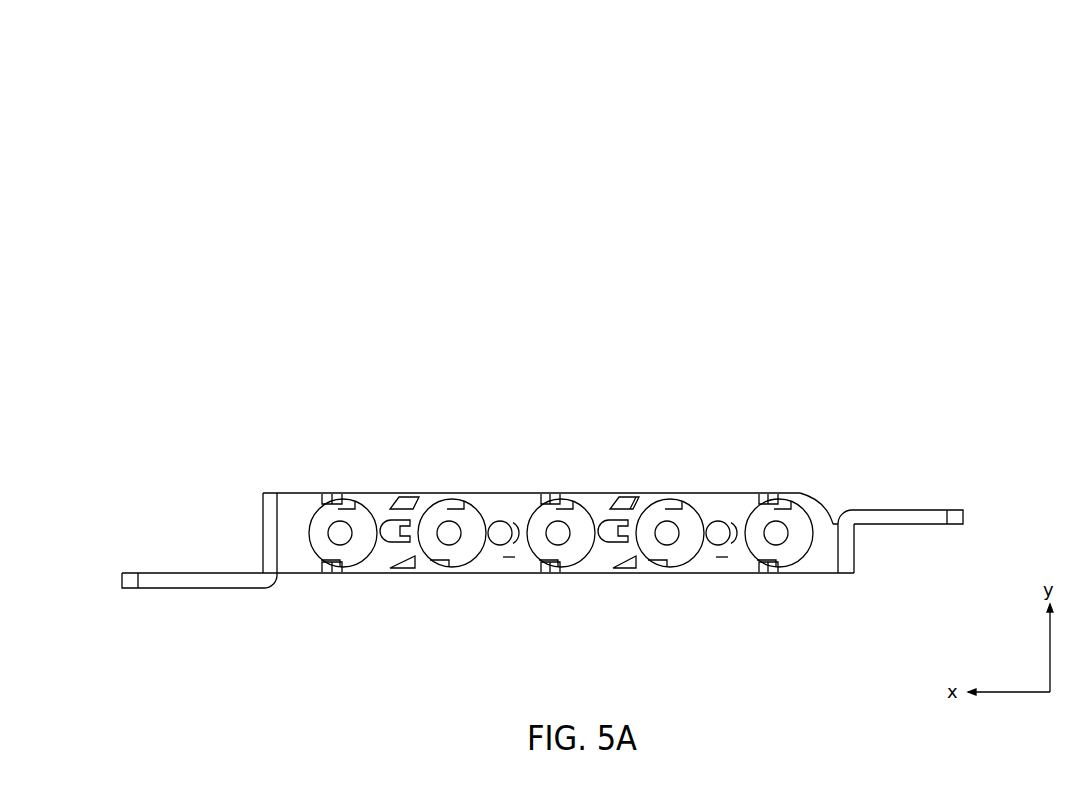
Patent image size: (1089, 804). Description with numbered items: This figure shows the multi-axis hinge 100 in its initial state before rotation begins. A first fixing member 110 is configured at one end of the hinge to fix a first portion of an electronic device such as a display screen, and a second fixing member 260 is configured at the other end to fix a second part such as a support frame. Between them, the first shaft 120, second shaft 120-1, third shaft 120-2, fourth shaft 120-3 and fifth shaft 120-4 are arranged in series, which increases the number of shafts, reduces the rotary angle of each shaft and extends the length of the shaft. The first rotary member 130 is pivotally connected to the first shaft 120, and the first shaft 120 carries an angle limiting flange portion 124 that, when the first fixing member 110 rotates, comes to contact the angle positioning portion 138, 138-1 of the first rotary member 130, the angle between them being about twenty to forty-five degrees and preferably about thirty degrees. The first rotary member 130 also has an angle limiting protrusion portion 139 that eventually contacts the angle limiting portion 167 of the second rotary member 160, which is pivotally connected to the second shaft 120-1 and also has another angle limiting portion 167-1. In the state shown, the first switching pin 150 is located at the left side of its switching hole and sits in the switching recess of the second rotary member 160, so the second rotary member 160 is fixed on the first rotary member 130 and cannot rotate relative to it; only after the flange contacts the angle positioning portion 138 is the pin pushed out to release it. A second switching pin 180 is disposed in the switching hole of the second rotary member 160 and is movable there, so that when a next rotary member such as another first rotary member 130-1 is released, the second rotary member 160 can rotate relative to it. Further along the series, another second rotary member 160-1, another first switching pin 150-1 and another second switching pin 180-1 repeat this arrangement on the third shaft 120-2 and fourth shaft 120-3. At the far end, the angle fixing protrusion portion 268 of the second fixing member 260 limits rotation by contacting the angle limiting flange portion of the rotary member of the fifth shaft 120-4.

The multi-axis hinge 100 is at (70, 53).
The first fixing member 110 is at (900, 509).
The first shaft 120 is at (779, 534).
The second shaft 120-1 is at (664, 530).
The third shaft 120-2 is at (558, 534).
The fourth shaft 120-3 is at (449, 534).
The fifth shaft 120-4 is at (340, 534).
The angle limiting flange portion 124 is at (803, 493).
The first rotary member 130 is at (722, 557).
The another first rotary member 130-1 is at (510, 558).
The angle positioning portion 138 is at (766, 493).
The angle positioning portion 138-1 is at (765, 573).
The angle limiting protrusion portion 139 is at (660, 510).
The first switching pin 150 is at (718, 530).
The first switching pin 150-1 is at (500, 530).
The second rotary member 160 is at (600, 510).
The another second rotary member 160-1 is at (381, 573).
The angle limiting portion 167 is at (630, 557).
The angle limiting portion 167-1 is at (628, 505).
The second switching pin 180 is at (610, 548).
The second switching pin 180-1 is at (383, 518).
The second fixing member 260 is at (200, 588).
The angle fixing protrusion portion 268 is at (326, 493).